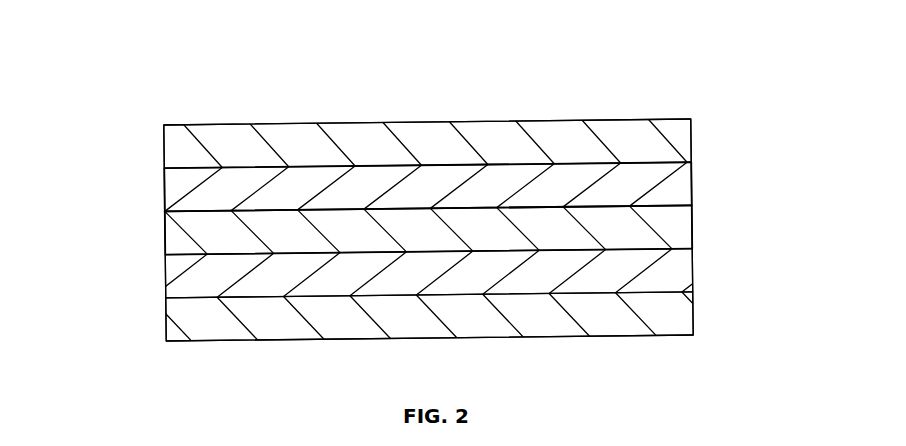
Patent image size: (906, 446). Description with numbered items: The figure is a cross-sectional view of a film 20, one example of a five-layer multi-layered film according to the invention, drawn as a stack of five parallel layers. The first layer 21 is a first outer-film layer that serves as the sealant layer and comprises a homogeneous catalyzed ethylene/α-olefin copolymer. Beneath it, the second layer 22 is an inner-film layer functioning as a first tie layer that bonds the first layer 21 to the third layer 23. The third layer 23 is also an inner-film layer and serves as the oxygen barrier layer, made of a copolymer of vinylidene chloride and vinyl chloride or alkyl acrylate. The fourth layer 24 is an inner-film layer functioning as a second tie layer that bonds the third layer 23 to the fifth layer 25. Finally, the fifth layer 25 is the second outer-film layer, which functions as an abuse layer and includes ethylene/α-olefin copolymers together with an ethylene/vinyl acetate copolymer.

The film 20 is at (395, 89).
The first layer 21 is at (710, 137).
The second layer 22 is at (140, 193).
The third layer 23 is at (710, 232).
The fourth layer 24 is at (135, 283).
The fifth layer 25 is at (715, 315).